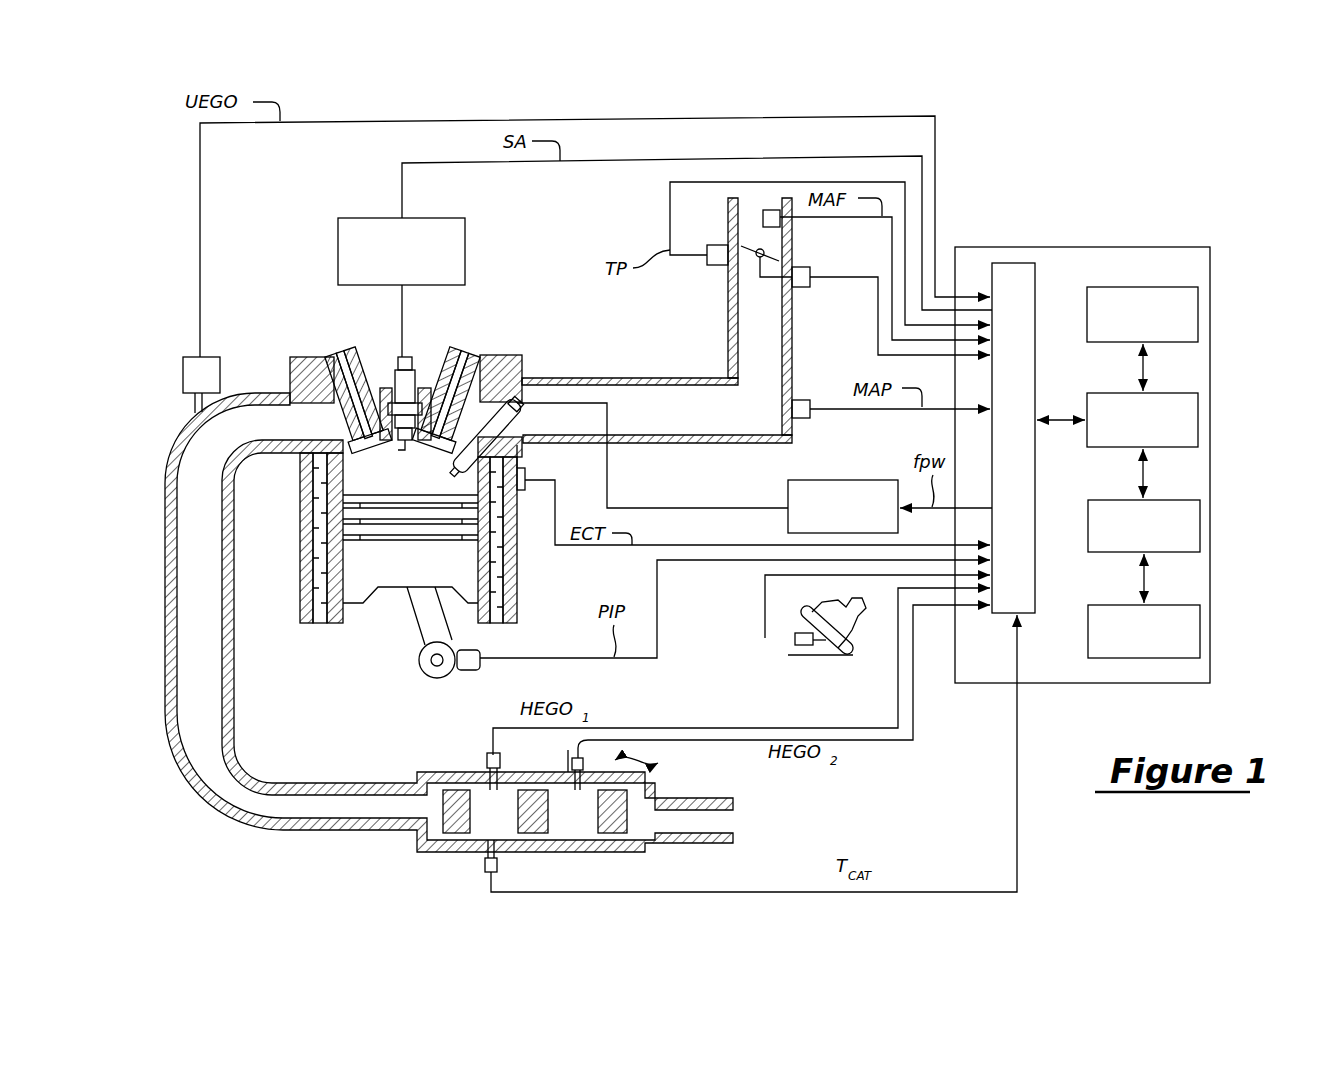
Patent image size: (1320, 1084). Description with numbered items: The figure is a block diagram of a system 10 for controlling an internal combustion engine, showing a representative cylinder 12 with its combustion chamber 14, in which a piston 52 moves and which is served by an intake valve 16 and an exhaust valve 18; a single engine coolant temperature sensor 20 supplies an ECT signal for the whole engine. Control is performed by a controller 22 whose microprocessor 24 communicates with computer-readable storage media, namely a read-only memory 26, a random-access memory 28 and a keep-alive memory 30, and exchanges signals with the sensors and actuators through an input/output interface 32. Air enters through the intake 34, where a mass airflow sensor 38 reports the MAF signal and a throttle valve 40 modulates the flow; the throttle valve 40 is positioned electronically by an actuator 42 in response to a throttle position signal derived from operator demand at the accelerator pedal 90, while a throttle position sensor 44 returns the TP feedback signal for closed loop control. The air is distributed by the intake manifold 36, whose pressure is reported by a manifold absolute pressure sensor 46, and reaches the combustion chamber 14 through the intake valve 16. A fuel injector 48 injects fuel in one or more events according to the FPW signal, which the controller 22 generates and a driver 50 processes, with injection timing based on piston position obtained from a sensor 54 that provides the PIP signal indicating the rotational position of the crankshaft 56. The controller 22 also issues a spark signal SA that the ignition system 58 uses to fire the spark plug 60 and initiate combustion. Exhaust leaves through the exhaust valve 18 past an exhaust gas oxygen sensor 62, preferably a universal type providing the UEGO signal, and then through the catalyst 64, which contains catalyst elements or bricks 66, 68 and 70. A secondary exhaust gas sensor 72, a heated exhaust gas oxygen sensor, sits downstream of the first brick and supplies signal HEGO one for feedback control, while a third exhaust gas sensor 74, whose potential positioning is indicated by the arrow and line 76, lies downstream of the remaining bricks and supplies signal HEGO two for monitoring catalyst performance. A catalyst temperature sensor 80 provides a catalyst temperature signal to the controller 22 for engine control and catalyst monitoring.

The system 10 is at (306, 310).
The cylinder 12 is at (348, 625).
The combustion chamber 14 is at (320, 490).
The intake valve 16 is at (468, 350).
The exhaust valve 18 is at (350, 432).
The engine coolant temperature sensor 20 is at (527, 472).
The controller 22 is at (1137, 247).
The microprocessor 24 is at (1098, 393).
The read-only memory (ROM) 26 is at (1145, 287).
The random-access memory (RAM) 28 is at (1100, 500).
The keep-alive memory (KAM) 30 is at (1100, 605).
The input/output (I/O) interface 32 is at (1037, 283).
The intake 34 is at (752, 325).
The intake manifold 36 is at (695, 393).
The mass airflow sensor 38 is at (770, 210).
The throttle valve 40 is at (730, 292).
The actuator 42 is at (805, 267).
The throttle position sensor 44 is at (710, 245).
The manifold absolute pressure sensor 46 is at (800, 400).
The fuel injector 48 is at (553, 378).
The driver 50 is at (840, 480).
The piston 52 is at (392, 590).
The sensor 54 is at (470, 673).
The crankshaft 56 is at (430, 680).
The ignition system 58 is at (338, 232).
The spark plug 60 is at (398, 362).
The exhaust gas oxygen sensor 62 is at (190, 357).
The catalyst 64 is at (440, 772).
The catalyst element 66 is at (455, 833).
The catalyst element 68 is at (530, 833).
The catalyst element 70 is at (612, 833).
The secondary exhaust gas sensor 72 is at (500, 760).
The third exhaust gas sensor 74 is at (584, 758).
The arrow and line 76 is at (662, 762).
The catalyst temperature sensor 80 is at (485, 868).
The accelerator pedal 90 is at (832, 655).